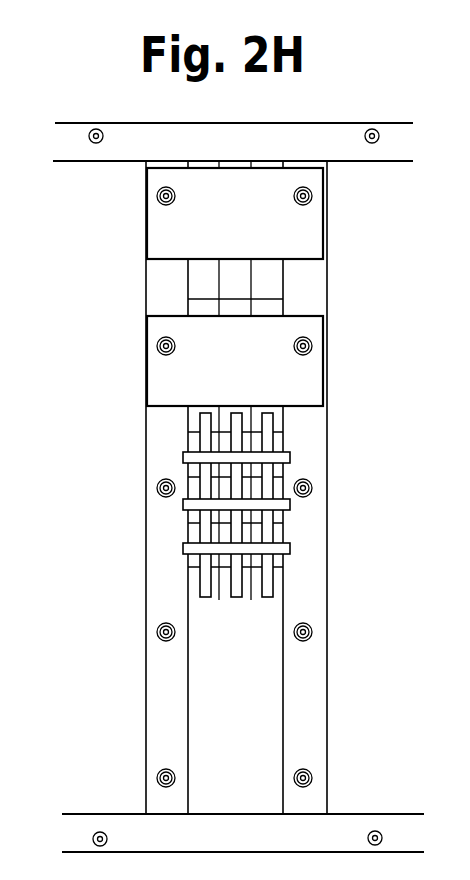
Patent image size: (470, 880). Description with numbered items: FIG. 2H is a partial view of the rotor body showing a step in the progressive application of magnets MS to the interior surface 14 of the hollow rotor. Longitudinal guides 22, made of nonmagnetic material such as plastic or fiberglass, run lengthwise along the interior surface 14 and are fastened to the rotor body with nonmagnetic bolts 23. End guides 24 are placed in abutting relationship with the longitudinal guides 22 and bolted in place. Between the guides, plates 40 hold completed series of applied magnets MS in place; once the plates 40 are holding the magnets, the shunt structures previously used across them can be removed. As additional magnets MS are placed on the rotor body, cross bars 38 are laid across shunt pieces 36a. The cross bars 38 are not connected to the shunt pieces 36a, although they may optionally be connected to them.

The interior surface 14 is at (128, 462).
The guides 22 is at (160, 675).
The bolts 23 is at (310, 781).
The end guides 24 is at (121, 148).
The shunt pieces 36a is at (268, 425).
The cross bars 38 is at (283, 548).
The plates 40 is at (323, 228).
The magnets MS is at (268, 279).